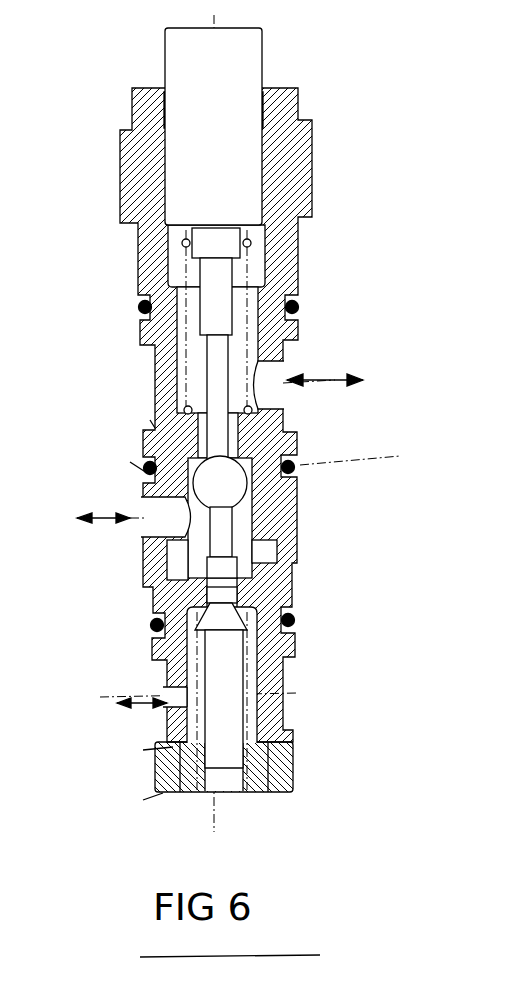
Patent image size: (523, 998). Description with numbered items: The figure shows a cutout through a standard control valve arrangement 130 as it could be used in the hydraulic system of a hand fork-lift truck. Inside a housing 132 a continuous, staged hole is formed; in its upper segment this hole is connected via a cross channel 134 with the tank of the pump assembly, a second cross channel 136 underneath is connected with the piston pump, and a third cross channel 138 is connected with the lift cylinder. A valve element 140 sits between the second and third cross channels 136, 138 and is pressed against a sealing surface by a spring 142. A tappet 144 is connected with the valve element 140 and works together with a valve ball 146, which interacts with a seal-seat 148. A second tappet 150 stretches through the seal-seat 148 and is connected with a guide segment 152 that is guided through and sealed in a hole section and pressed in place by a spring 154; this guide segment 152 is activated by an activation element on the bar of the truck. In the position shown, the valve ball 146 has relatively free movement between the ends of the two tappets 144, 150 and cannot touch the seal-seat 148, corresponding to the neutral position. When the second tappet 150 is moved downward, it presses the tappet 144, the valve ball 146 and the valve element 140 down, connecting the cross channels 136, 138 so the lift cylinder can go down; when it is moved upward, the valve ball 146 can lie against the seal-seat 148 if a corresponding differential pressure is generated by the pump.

The control valve arrangement 130 is at (318, 250).
The housing 132 is at (247, 243).
The cross channel 134 is at (283, 363).
The second cross channel 136 is at (147, 503).
The third cross channel 138 is at (167, 688).
The valve element 140 is at (222, 620).
The spring 142 is at (245, 685).
The tappet 144 is at (222, 540).
The valve ball 146 is at (228, 490).
The seal-seat 148 is at (255, 440).
The second tappet 150 is at (212, 378).
The guide segment 152 is at (247, 67).
The spring 154 is at (186, 243).